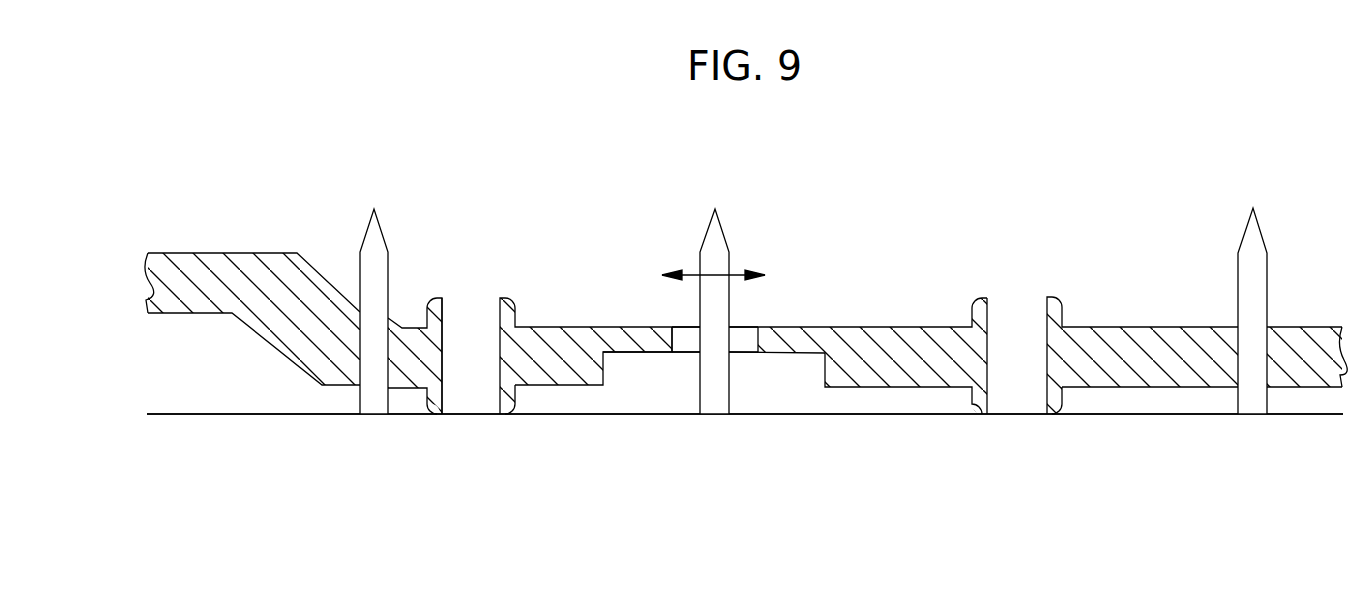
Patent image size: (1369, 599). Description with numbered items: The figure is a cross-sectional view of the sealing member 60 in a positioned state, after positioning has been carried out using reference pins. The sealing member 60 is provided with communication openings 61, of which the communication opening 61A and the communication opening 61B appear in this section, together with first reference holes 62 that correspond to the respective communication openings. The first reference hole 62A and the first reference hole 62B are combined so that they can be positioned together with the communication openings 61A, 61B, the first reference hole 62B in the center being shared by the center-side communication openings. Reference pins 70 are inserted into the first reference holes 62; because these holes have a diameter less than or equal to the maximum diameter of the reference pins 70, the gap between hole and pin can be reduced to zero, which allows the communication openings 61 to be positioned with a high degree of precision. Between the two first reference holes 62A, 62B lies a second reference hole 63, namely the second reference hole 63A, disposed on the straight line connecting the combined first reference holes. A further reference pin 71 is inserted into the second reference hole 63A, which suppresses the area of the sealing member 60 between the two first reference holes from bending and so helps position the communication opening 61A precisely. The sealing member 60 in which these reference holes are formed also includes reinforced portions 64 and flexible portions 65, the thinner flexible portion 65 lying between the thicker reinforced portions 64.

The sealing member 60 is at (1114, 156).
The communication openings 61 is at (756, 338).
The communication opening 61A is at (442, 343).
The communication opening 61B is at (988, 345).
The first reference holes 62 is at (746, 376).
The first reference hole 62A is at (363, 370).
The first reference hole 62B is at (1238, 372).
The second reference holes 63 is at (710, 400).
The second reference hole 63A is at (677, 333).
The reinforced portions 64 is at (560, 367).
The flexible portions 65 is at (615, 327).
The reference pins 70 is at (375, 243).
The reference pin 71 is at (716, 243).